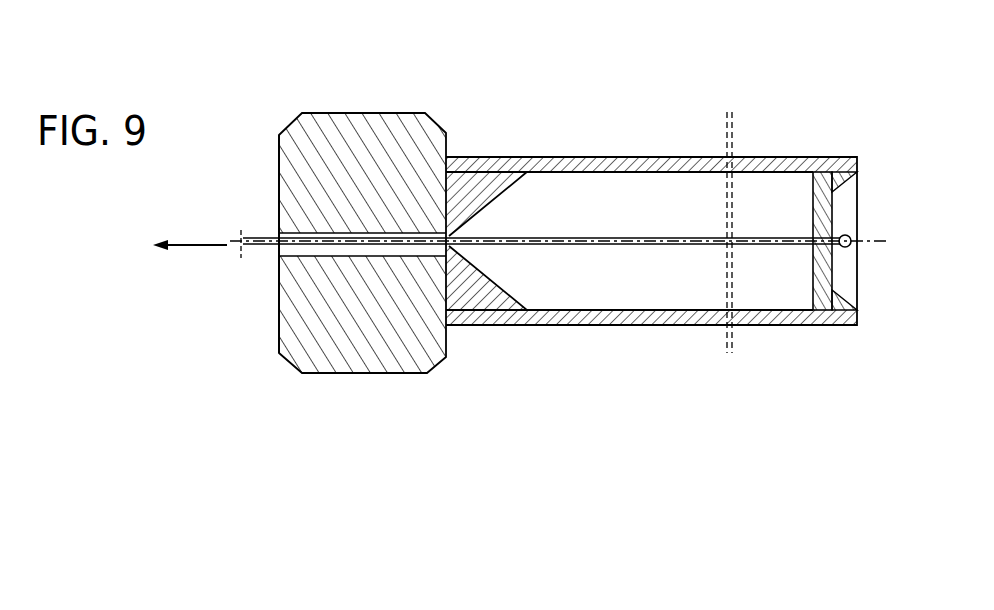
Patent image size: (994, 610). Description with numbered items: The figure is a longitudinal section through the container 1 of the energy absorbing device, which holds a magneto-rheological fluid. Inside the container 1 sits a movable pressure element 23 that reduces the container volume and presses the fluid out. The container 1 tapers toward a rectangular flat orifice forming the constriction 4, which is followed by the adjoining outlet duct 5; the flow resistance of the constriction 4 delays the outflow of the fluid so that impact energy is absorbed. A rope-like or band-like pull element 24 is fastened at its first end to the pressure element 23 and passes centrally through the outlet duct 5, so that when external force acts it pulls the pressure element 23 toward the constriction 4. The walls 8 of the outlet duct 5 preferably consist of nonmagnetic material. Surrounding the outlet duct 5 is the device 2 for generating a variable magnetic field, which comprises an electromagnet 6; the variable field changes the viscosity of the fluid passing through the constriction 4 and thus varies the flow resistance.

The container 1 is at (575, 167).
The device for generating a variable magnetic field 2 is at (439, 144).
The constriction 4 is at (427, 262).
The outlet duct 5 is at (279, 143).
The electromagnet 6 is at (422, 345).
The walls of the outlet duct 8 is at (307, 255).
The pressure element 23 is at (823, 305).
The pull element 24 is at (640, 243).